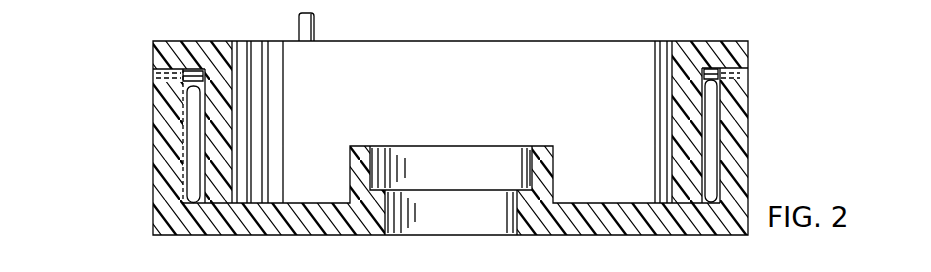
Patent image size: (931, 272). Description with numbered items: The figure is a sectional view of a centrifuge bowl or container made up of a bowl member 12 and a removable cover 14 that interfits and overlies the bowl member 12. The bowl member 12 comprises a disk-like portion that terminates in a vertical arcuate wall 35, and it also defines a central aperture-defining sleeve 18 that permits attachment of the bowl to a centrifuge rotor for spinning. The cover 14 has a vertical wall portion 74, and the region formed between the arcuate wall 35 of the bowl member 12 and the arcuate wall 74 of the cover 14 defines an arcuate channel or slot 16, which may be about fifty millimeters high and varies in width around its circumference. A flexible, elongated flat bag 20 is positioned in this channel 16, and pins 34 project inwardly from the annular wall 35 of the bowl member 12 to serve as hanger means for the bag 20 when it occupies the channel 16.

The bowl member 12 is at (175, 236).
The cover 14 is at (737, 50).
The arcuate channel 16 is at (220, 41).
The central aperture-defining sleeve 18 is at (520, 146).
The bag 20 is at (200, 145).
The pins 34 is at (183, 69).
The vertical arcuate wall 35 is at (173, 113).
The vertical wall portion 74 is at (220, 178).